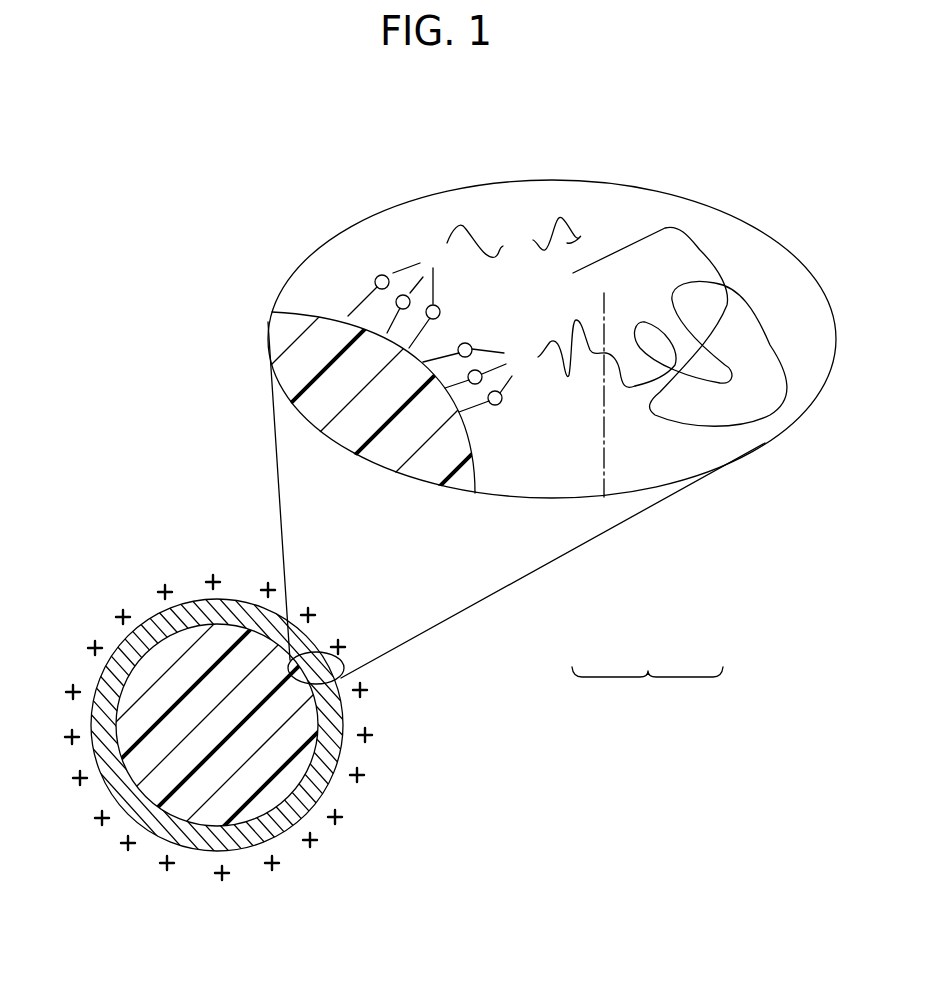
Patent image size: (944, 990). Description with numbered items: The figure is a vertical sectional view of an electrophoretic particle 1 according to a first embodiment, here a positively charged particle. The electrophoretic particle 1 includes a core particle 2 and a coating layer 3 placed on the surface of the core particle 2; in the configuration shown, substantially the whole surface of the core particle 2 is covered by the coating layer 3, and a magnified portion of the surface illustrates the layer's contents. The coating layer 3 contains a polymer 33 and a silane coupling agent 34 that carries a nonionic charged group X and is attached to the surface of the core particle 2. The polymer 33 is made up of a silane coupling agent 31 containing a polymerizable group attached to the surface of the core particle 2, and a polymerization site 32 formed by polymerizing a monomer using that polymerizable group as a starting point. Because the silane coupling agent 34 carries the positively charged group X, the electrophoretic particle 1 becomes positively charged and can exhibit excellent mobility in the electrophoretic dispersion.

The electrophoretic particle 1 is at (88, 601).
The core particle 2 is at (287, 380).
The coating layer 3 is at (626, 215).
The silane coupling agent 31 is at (541, 400).
The polymerization site 32 is at (713, 450).
The polymer 33 is at (647, 688).
The silane coupling agent 34 is at (447, 217).